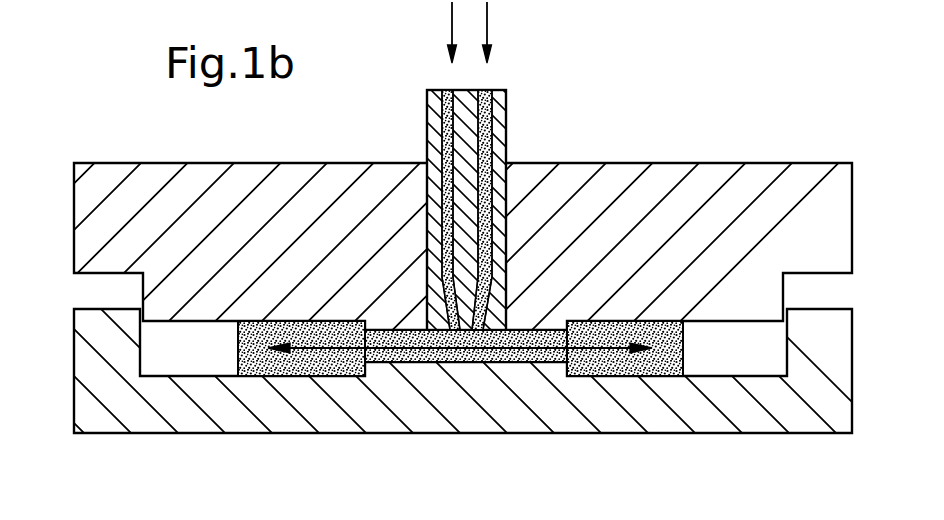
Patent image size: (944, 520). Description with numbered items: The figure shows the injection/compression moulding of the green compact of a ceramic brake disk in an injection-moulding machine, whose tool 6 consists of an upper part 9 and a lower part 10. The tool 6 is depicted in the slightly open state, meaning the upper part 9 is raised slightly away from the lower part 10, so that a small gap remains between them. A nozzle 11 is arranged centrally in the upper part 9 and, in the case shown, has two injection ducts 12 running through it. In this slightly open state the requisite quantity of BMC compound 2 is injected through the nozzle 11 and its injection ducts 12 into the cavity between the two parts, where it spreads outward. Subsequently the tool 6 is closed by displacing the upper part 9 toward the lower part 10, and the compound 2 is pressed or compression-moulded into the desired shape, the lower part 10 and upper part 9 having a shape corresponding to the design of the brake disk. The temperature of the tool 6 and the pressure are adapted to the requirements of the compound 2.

The BMC compound 2 is at (622, 372).
The tool 6 is at (68, 292).
The upper part 9 is at (823, 198).
The lower part 10 is at (825, 355).
The nozzle 11 is at (498, 139).
The injection ducts 12 is at (486, 89).